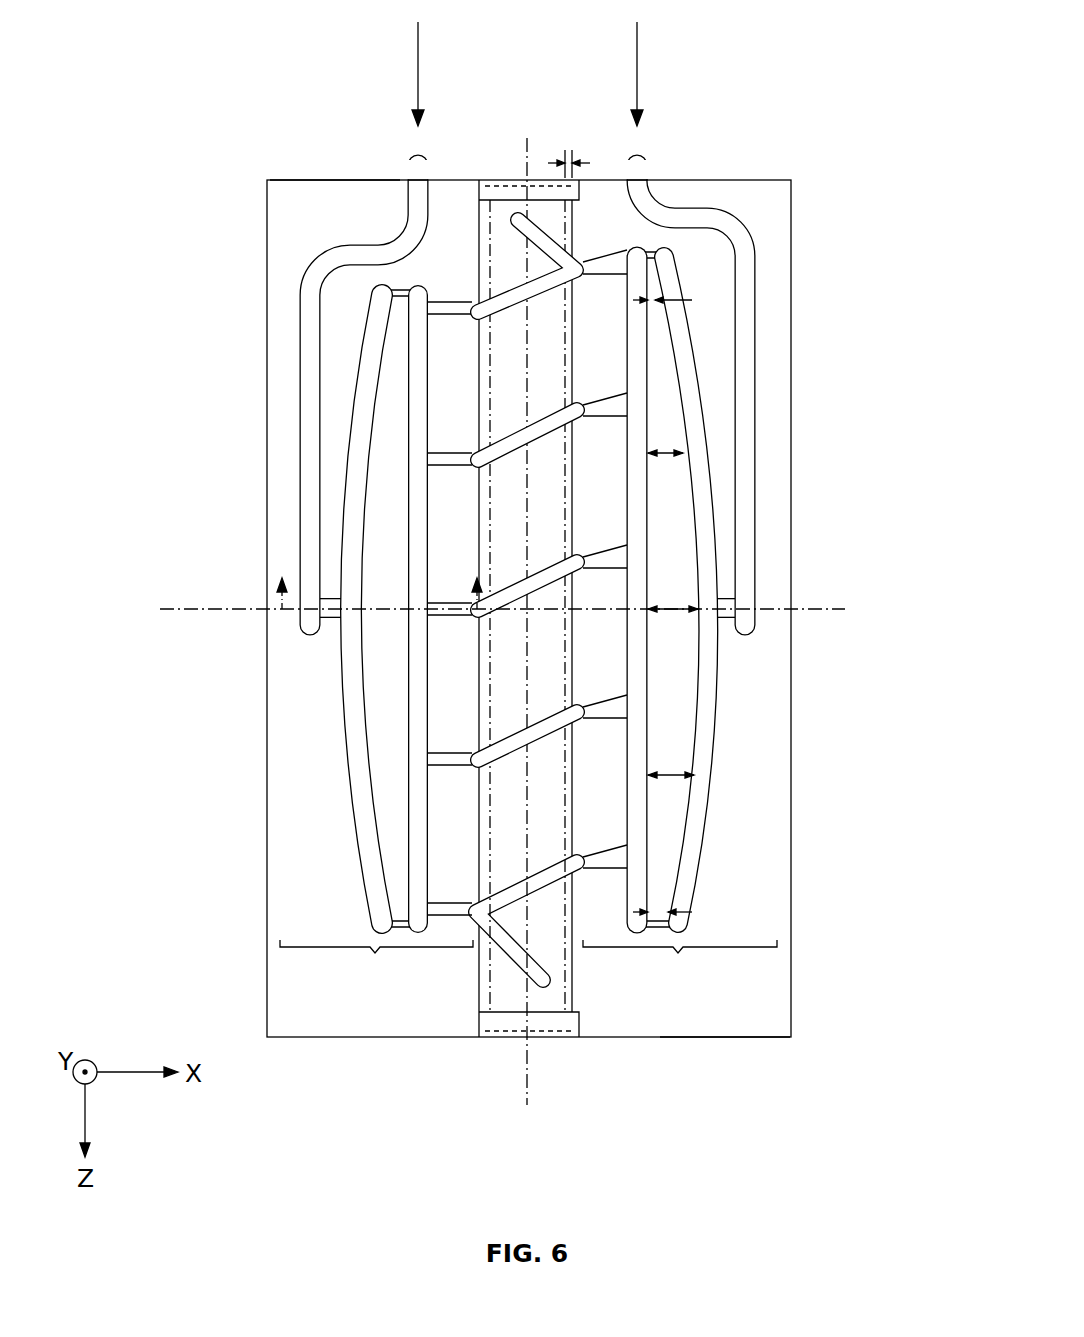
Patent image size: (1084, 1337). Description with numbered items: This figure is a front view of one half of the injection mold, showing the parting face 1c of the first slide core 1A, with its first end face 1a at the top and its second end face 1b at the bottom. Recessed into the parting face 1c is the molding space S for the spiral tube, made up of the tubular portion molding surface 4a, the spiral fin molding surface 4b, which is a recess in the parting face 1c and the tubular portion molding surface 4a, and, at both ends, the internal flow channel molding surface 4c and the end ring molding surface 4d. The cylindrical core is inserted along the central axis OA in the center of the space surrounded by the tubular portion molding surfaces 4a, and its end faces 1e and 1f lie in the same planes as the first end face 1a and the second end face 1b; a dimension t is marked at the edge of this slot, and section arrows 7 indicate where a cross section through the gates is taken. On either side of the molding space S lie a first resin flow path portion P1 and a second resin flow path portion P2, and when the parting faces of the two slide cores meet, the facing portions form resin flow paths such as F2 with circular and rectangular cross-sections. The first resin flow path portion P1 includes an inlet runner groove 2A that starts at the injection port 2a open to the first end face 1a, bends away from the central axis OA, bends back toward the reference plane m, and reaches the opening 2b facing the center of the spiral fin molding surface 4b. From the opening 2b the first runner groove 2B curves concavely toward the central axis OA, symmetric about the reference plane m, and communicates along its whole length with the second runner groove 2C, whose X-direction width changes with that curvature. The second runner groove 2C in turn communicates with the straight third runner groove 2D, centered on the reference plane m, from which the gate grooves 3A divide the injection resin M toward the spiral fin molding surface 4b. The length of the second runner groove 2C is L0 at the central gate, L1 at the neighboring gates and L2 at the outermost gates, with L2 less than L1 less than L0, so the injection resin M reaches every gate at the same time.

The first slide core 1A is at (770, 158).
The first end face 1a is at (313, 178).
The second end face 1b is at (762, 1040).
The parting face 1c is at (603, 187).
The end face of the core 1e is at (540, 182).
The end face of the core 1f is at (545, 1035).
The inlet runner groove 2A is at (330, 272).
The first runner groove 2B is at (355, 742).
The second runner groove 2C is at (700, 845).
The third runner groove 2D is at (417, 788).
The injection port 2a is at (418, 168).
The opening 2b is at (338, 616).
The gate groove 3A is at (442, 312).
The tubular portion molding surface 4a is at (502, 242).
The spiral fin molding surface 4b is at (478, 460).
The internal flow channel molding surface 4c is at (483, 246).
The end ring molding surface 4d is at (507, 182).
The resin flow path F2 is at (355, 415).
The molding space S is at (462, 578).
The injection resin M is at (418, 56).
The reference plane m is at (192, 606).
The section view direction 7 is at (377, 580).
The thickness t is at (569, 151).
The length of the second runner at the first gate L0 is at (673, 594).
The length of the second runner at the adjacent gate L1 is at (671, 599).
The length of the second runner at the outer gate L2 is at (679, 608).
The first resin flow path portion P1 is at (376, 965).
The second resin flow path portion P2 is at (680, 965).
The central axis OA is at (527, 1100).